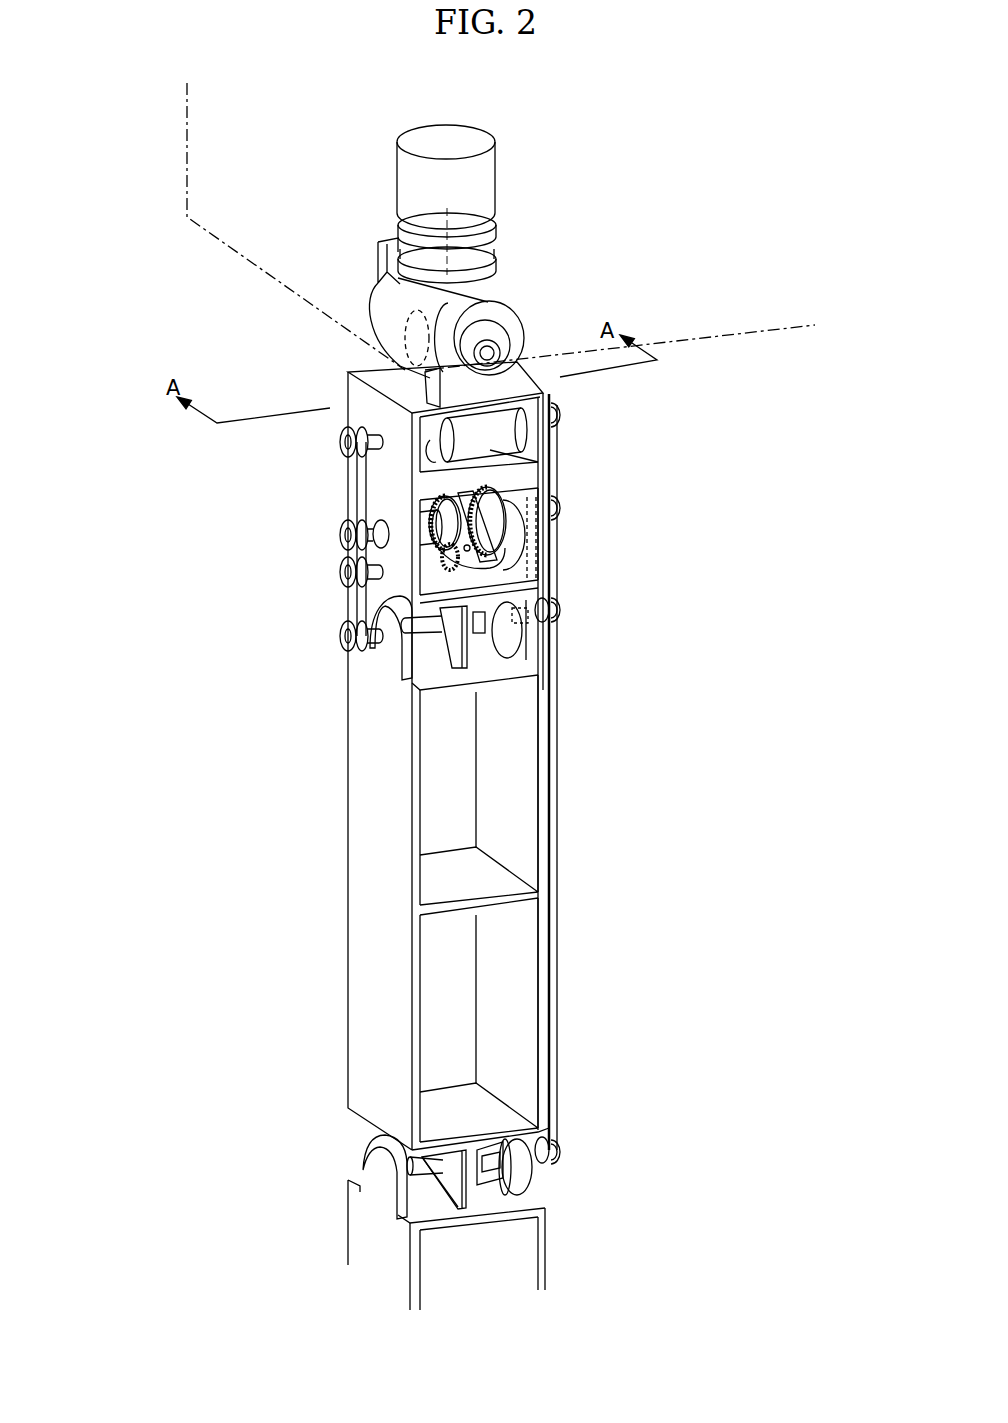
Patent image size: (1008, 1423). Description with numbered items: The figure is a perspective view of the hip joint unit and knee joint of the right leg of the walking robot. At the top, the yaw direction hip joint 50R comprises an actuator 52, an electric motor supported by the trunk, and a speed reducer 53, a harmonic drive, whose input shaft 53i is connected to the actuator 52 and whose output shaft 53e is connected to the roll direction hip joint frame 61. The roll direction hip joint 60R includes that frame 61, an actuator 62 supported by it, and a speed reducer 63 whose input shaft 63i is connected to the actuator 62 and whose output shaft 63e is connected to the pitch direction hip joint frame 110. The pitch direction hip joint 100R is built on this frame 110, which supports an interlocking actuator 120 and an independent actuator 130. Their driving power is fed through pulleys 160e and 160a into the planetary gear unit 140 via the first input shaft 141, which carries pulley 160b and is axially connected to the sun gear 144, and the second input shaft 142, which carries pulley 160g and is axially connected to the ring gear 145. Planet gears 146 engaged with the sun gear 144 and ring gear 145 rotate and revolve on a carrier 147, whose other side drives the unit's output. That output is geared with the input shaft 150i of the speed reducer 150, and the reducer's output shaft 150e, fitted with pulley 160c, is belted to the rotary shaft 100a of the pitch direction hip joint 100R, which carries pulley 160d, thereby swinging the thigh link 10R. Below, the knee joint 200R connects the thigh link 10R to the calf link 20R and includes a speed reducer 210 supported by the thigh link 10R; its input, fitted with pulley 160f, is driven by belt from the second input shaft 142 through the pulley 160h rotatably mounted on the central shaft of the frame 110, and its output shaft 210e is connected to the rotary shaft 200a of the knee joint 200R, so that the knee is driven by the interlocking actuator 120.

The thigh link 10R is at (350, 872).
The calf link 20R is at (367, 1252).
The yaw direction hip joint 50R is at (480, 204).
The actuator 52 is at (405, 171).
The speed reducer 53 is at (454, 245).
The input shaft 53i is at (493, 225).
The output shaft 53e is at (493, 266).
The roll direction hip joint 60R is at (512, 322).
The roll direction hip joint frame 61 is at (384, 267).
The actuator 62 is at (400, 301).
The speed reducer 63 is at (444, 327).
The input shaft 63i is at (460, 325).
The output shaft 63e is at (497, 355).
The pitch direction hip joint 100R is at (496, 756).
The rotary shaft 100a is at (402, 666).
The pitch direction hip joint frame 110 is at (362, 388).
The interlocking actuator 120 is at (497, 442).
The independent actuator 130 is at (420, 470).
The planetary gear unit 140 is at (451, 552).
The first input shaft 141 is at (370, 527).
The second input shaft 142 is at (525, 518).
The sun gear 144 is at (507, 547).
The ring gear 145 is at (503, 493).
The planet gears 146 is at (548, 585).
The carrier 147 is at (438, 554).
The speed reducer 150 is at (446, 636).
The output shaft 150e is at (414, 581).
The input shaft 150i is at (478, 644).
The pulley 160a is at (342, 435).
The pulley 160b is at (342, 546).
The pulley 160c is at (342, 589).
The pulley 160d is at (342, 650).
The pulley 160e is at (557, 416).
The pulley 160f is at (560, 1152).
The pulley 160g is at (560, 508).
The pulley 160h is at (553, 600).
The knee joint 200R is at (494, 1163).
The rotary shaft 200a is at (410, 1170).
The speed reducer 210 is at (493, 1170).
The output shaft 210e is at (552, 1142).